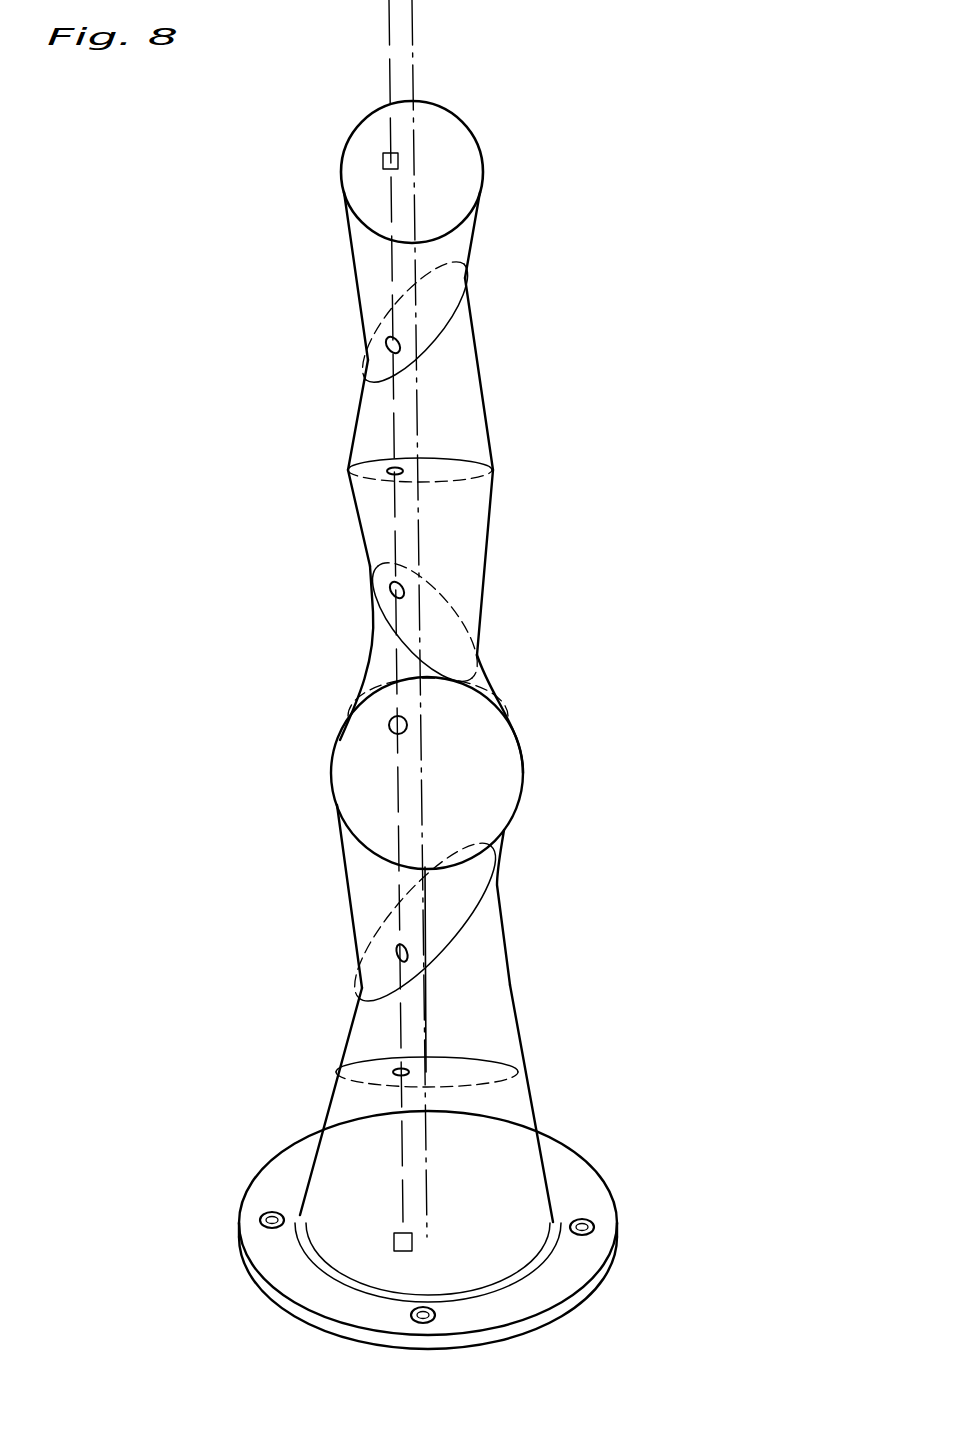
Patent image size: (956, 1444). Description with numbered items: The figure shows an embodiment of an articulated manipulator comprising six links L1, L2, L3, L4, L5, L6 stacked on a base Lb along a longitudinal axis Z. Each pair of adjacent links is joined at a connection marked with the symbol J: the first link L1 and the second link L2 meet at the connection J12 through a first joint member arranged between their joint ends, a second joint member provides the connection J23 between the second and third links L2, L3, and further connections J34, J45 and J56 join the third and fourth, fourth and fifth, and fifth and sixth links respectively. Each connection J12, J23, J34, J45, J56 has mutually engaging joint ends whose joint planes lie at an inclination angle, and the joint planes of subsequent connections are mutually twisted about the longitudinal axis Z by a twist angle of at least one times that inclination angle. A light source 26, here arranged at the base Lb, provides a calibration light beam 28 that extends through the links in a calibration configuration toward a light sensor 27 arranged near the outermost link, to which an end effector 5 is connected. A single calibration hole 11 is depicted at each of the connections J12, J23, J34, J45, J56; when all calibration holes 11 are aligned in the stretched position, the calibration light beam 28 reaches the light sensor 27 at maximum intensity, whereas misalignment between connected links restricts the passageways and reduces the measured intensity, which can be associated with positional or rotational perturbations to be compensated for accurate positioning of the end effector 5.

The end effector 5 is at (355, 130).
The light sensor 27 is at (383, 162).
The light source 26 is at (395, 1249).
The calibration light beam 28 is at (402, 1018).
The calibration hole 11 is at (390, 347).
The longitudinal axis Z is at (415, 66).
The sixth link L6 is at (466, 231).
The fifth link L5 is at (470, 426).
The fourth link L4 is at (475, 567).
The third link L3 is at (493, 775).
The second link L2 is at (358, 868).
The first link L1 is at (510, 977).
The base Lb is at (513, 1107).
The connection between fifth and sixth links J56 is at (450, 320).
The connection between fourth and fifth links J45 is at (352, 477).
The connection between third and fourth links J34 is at (377, 604).
The connection between second and third links J23 is at (333, 782).
The connection between first and second links J12 is at (483, 905).